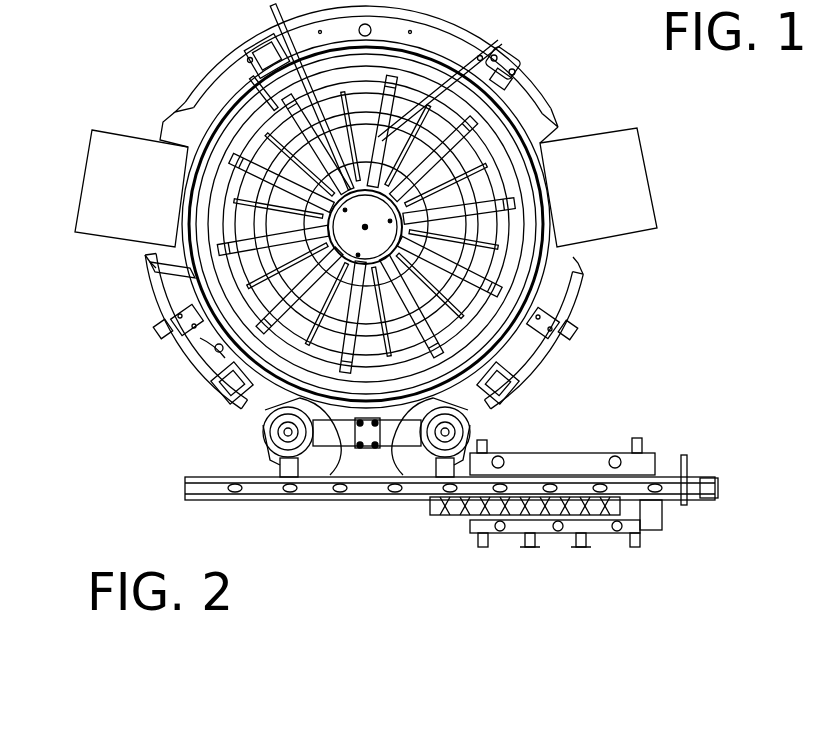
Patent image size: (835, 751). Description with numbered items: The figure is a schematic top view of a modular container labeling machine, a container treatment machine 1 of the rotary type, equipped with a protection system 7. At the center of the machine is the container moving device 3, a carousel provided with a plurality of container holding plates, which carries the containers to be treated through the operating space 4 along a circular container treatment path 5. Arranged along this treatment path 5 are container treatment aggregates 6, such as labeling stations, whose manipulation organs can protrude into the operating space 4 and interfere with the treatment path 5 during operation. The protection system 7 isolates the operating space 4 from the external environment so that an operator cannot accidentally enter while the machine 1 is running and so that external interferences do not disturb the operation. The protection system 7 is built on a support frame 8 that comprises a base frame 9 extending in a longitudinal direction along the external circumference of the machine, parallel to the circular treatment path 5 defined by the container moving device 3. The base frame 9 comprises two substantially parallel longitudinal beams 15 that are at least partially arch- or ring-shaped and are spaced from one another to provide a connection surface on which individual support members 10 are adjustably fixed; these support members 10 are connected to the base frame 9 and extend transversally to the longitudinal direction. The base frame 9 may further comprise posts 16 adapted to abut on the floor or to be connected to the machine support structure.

The container treatment machine 1 is at (405, 273).
The container moving device 3 is at (507, 272).
The operating space 4 is at (518, 245).
The container treatment path 5 is at (495, 45).
The container treatment aggregate 6 is at (127, 155).
The protection system 7 is at (540, 90).
The support frame 8 is at (183, 288).
The base frame 9 is at (228, 352).
The support member 10 is at (200, 330).
The longitudinal beam 15 is at (542, 355).
The post 16 is at (227, 397).